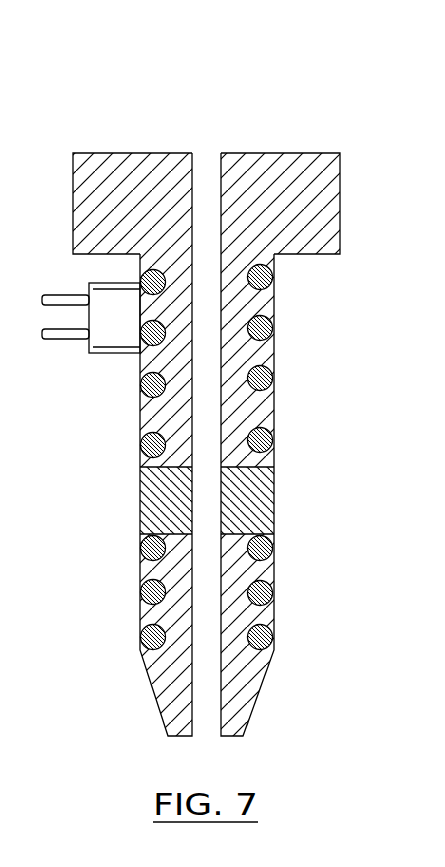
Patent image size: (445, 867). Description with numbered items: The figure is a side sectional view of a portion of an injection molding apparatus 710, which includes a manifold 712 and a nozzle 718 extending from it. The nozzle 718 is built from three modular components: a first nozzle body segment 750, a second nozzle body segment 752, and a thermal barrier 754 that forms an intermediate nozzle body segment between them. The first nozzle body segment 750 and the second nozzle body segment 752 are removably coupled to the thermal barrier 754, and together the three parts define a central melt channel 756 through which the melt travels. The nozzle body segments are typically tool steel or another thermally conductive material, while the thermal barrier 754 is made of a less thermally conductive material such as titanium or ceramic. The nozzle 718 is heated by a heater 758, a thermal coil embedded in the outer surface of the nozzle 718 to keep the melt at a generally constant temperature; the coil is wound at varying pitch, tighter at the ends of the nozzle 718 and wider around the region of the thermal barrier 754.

The injection molding apparatus 710 is at (225, 383).
The manifold 712 is at (312, 181).
The nozzle 718 is at (158, 416).
The first nozzle body segment 750 is at (263, 360).
The second nozzle body segment 752 is at (252, 608).
The thermal barrier 754 is at (250, 498).
The melt channel 756 is at (208, 561).
The heater 758 is at (252, 386).